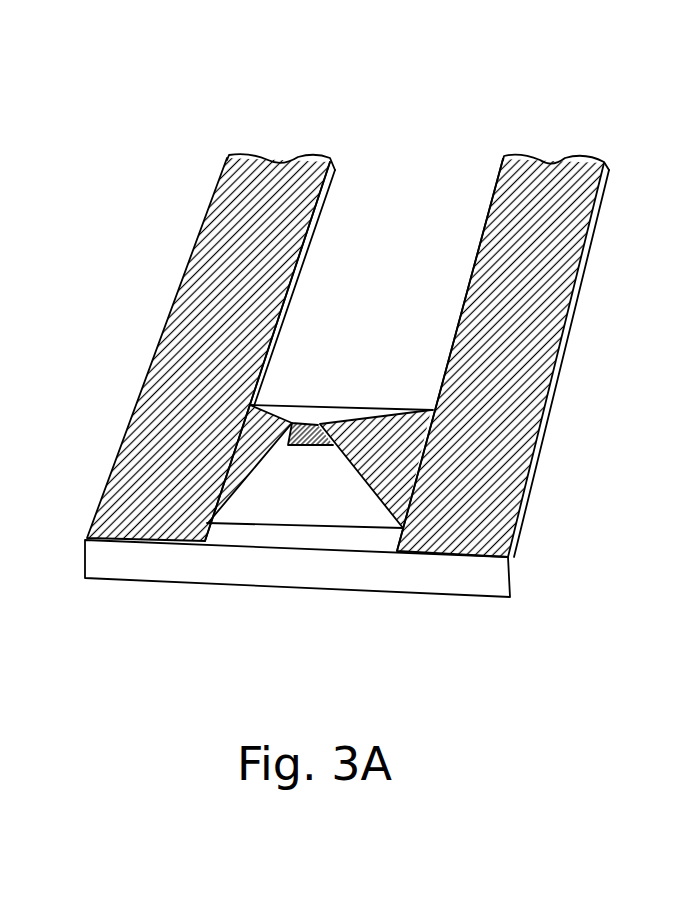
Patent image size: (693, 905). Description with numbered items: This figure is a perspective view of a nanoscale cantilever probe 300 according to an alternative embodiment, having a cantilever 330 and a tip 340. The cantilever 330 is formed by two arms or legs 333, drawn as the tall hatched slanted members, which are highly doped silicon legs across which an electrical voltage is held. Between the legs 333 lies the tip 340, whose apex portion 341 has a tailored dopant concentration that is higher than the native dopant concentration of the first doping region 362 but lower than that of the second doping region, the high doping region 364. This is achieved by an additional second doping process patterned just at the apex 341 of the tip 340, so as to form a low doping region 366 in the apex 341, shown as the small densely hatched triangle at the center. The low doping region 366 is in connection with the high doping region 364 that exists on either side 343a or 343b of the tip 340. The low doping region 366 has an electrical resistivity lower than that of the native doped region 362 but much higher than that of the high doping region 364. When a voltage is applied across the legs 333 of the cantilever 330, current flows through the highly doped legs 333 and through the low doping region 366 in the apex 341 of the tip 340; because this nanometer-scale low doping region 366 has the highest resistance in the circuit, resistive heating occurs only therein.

The cantilever probe 300 is at (692, 54).
The cantilever 330 is at (103, 209).
The arms (or legs) 333 is at (278, 168).
The tip 340 is at (353, 369).
The apex portion 341 is at (310, 447).
The side of the tip 343a is at (397, 498).
The side of the tip 343b is at (237, 470).
The first doping region 362 is at (359, 401).
The second doping region (high doping region) 364 is at (243, 441).
The low doping region 366 is at (305, 412).